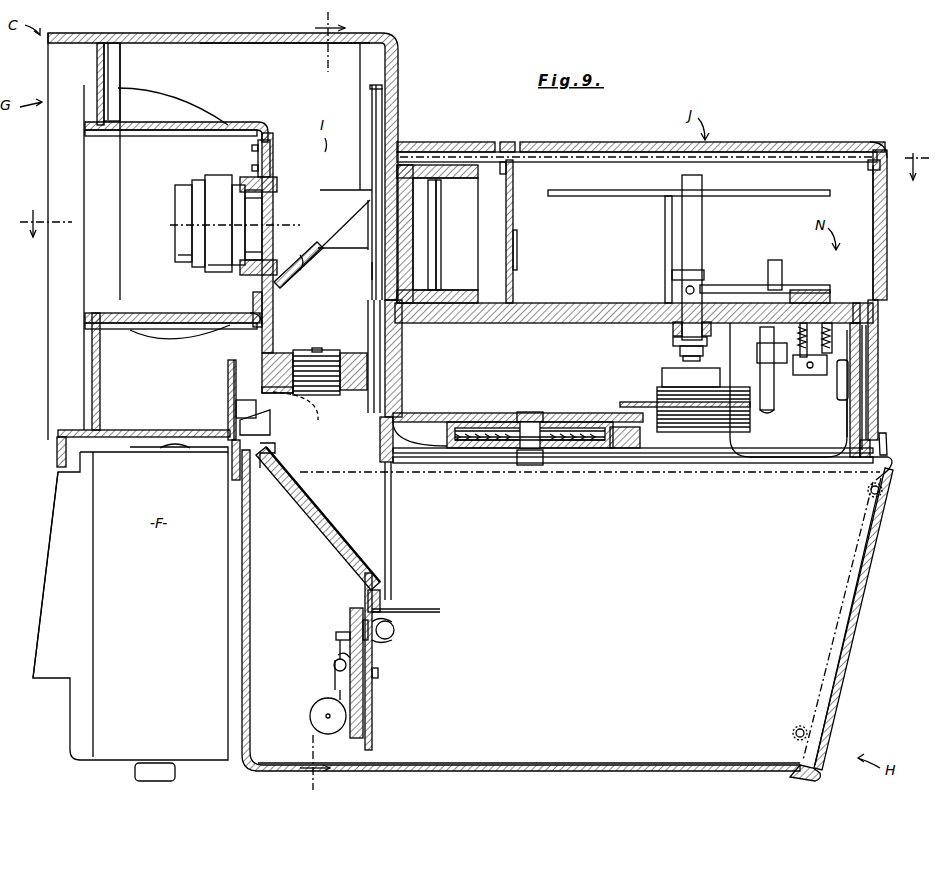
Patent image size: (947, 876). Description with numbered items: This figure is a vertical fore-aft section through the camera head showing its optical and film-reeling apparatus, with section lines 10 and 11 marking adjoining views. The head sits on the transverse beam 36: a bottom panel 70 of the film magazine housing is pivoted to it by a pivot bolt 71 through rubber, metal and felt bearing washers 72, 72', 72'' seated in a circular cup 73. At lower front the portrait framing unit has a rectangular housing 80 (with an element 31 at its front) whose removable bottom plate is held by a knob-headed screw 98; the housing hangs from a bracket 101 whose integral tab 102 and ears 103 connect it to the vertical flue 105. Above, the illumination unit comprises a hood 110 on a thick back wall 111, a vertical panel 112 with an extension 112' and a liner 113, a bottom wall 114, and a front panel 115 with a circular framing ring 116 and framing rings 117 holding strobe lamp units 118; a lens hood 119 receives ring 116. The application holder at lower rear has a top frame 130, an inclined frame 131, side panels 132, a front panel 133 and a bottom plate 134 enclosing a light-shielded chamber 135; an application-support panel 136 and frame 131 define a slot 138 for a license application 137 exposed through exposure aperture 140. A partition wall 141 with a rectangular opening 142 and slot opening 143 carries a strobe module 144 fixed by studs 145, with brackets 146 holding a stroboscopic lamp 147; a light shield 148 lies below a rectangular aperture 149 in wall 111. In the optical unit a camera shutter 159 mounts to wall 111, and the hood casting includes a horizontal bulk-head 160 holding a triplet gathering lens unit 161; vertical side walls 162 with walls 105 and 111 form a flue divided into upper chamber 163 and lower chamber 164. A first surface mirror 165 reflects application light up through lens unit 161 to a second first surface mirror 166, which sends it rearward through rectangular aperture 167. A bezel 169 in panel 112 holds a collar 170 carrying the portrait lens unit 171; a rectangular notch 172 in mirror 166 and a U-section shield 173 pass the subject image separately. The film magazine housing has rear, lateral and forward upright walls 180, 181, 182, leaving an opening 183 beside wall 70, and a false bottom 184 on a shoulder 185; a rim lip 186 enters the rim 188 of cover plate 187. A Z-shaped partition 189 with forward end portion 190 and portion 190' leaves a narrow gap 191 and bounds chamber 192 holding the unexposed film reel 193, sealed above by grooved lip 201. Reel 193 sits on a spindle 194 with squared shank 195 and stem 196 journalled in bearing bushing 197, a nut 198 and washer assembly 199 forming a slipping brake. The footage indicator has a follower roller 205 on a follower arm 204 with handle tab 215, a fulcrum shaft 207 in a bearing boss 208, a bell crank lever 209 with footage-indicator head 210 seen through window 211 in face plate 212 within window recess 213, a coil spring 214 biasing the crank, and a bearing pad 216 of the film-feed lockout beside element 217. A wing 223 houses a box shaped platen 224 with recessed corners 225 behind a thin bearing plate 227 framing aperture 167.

The section line 10- 10 is at (312, 402).
The section line 11- 11 is at (475, 207).
The housing wall 31 is at (46, 646).
The transverse beam 36 is at (615, 448).
The bottom panel 70 is at (480, 420).
The pivot bolt 71 is at (537, 403).
The bearing washer 72 is at (522, 457).
The bearing washer 72' is at (530, 465).
The bearing washer 72'' is at (530, 409).
The circular cup 73 is at (512, 448).
The rectangular housing 80 is at (130, 606).
The knob-headed screw 98 is at (135, 772).
The bracket 101 is at (230, 388).
The integral tab 102 is at (170, 462).
The ears 103 is at (232, 373).
The vertical flue 105 is at (238, 409).
The hood 110 is at (230, 36).
The back wall 111 is at (399, 83).
The vertical panel 112 is at (280, 243).
The partition extension 112' is at (279, 418).
The inner liner 113 is at (290, 38).
The bottom wall 114 is at (168, 420).
The front panel 115 is at (92, 396).
The circular framing ring 116 is at (88, 290).
The framing rings 117 is at (122, 72).
The strobe lamp units 118 is at (182, 110).
The lens hood 119 is at (226, 124).
The top frame 130 is at (240, 480).
The frame 131 is at (860, 497).
The side panels 132 is at (258, 770).
The front panel 133 is at (250, 600).
The bottom plate 134 is at (512, 771).
The light-shielded chamber 135 is at (632, 612).
The application-support panel 136 is at (856, 612).
The license application 137 is at (886, 445).
The slot 138 is at (892, 478).
The exposure aperture 140 is at (858, 552).
The partition wall 141 is at (373, 722).
The rectangular opening 142 is at (393, 457).
The slot opening 143 is at (375, 650).
The strobe module 144 is at (356, 608).
The studs 145 is at (376, 682).
The brackets 146 is at (397, 640).
The stroboscopic lamp 147 is at (395, 630).
The light shield 148 is at (440, 611).
The rectangular aperture 149 is at (392, 558).
The camera shutter 159 is at (372, 160).
The horizontal bulk-head 160 is at (272, 343).
The triplet gathering lens unit 161 is at (334, 344).
The vertical side walls 162 is at (303, 252).
The upper chamber 163 is at (325, 300).
The lower chamber 164 is at (301, 456).
The first surface mirror 165 is at (305, 545).
The first surface mirror 166 is at (300, 262).
The rectangular aperture 167 is at (380, 270).
The bezel 169 is at (248, 178).
The collar 170 is at (275, 195).
The portrait lens unit 171 is at (188, 173).
The rectangular notch 172 is at (352, 220).
The shield 173 is at (368, 244).
The rear upright wall 180 is at (887, 258).
The lateral upright wall 181 is at (887, 225).
The forward upright wall 182 is at (403, 360).
The opening 183 is at (688, 458).
The false bottom 184 is at (552, 322).
The shoulder 185 is at (870, 318).
The rim lip 186 is at (882, 150).
The cover plate 187 is at (805, 150).
The rim 188 is at (887, 156).
The partition 189 is at (590, 232).
The forward end portion 190 is at (526, 231).
The partition top 190' is at (496, 135).
The narrow gap 191 is at (400, 145).
The chamber 192 is at (590, 248).
The unexposed film reel 193 is at (586, 192).
The spindle 194 is at (702, 183).
The squared shank 195 is at (672, 290).
The stem 196 is at (676, 328).
The bearing bushing 197 is at (673, 342).
The nut 198 is at (683, 359).
The assembly of washers 199 is at (680, 351).
The grooved lip 201 is at (513, 175).
The follower arm 204 is at (745, 285).
The follower roller 205 is at (678, 272).
The fulcrum shaft 207 is at (812, 290).
The bearing boss 208 is at (832, 335).
The bell crank lever 209 is at (848, 362).
The footage-indicator head 210 is at (866, 368).
The window 211 is at (862, 387).
The face plate 212 is at (858, 408).
The window recess 213 is at (870, 443).
The coil spring 214 is at (878, 305).
The handle tab 215 is at (790, 249).
The bearing pad 216 is at (793, 372).
The block 217 is at (732, 392).
The wing 223 is at (500, 246).
The platen 224 is at (440, 234).
The recessed corners 225 is at (436, 264).
The bearing plate 227 is at (380, 188).